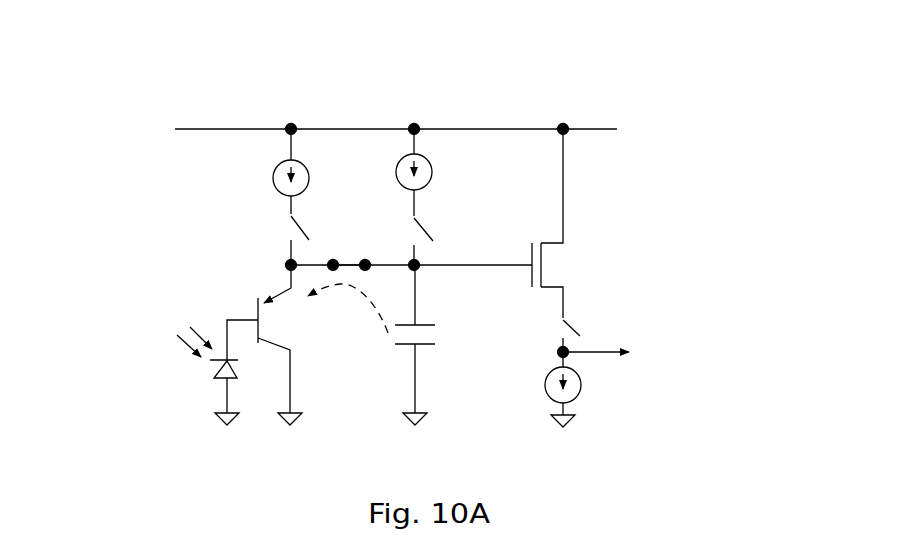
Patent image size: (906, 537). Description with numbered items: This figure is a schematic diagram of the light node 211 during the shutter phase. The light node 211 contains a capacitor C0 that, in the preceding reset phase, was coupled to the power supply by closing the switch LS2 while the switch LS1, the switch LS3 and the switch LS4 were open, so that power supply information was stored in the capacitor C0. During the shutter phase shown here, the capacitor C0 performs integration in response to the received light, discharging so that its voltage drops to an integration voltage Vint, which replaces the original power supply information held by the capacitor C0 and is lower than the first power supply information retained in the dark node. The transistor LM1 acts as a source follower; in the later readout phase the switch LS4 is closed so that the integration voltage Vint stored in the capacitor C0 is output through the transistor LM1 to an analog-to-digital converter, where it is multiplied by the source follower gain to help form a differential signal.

The light node 211 is at (672, 97).
The switch LS1 is at (281, 235).
The switch LS2 is at (437, 227).
The switch LS3 is at (352, 259).
The switch LS4 is at (573, 326).
The transistor LM1 is at (571, 269).
The capacitor C0 is at (433, 345).
The integration voltage Vint is at (359, 308).